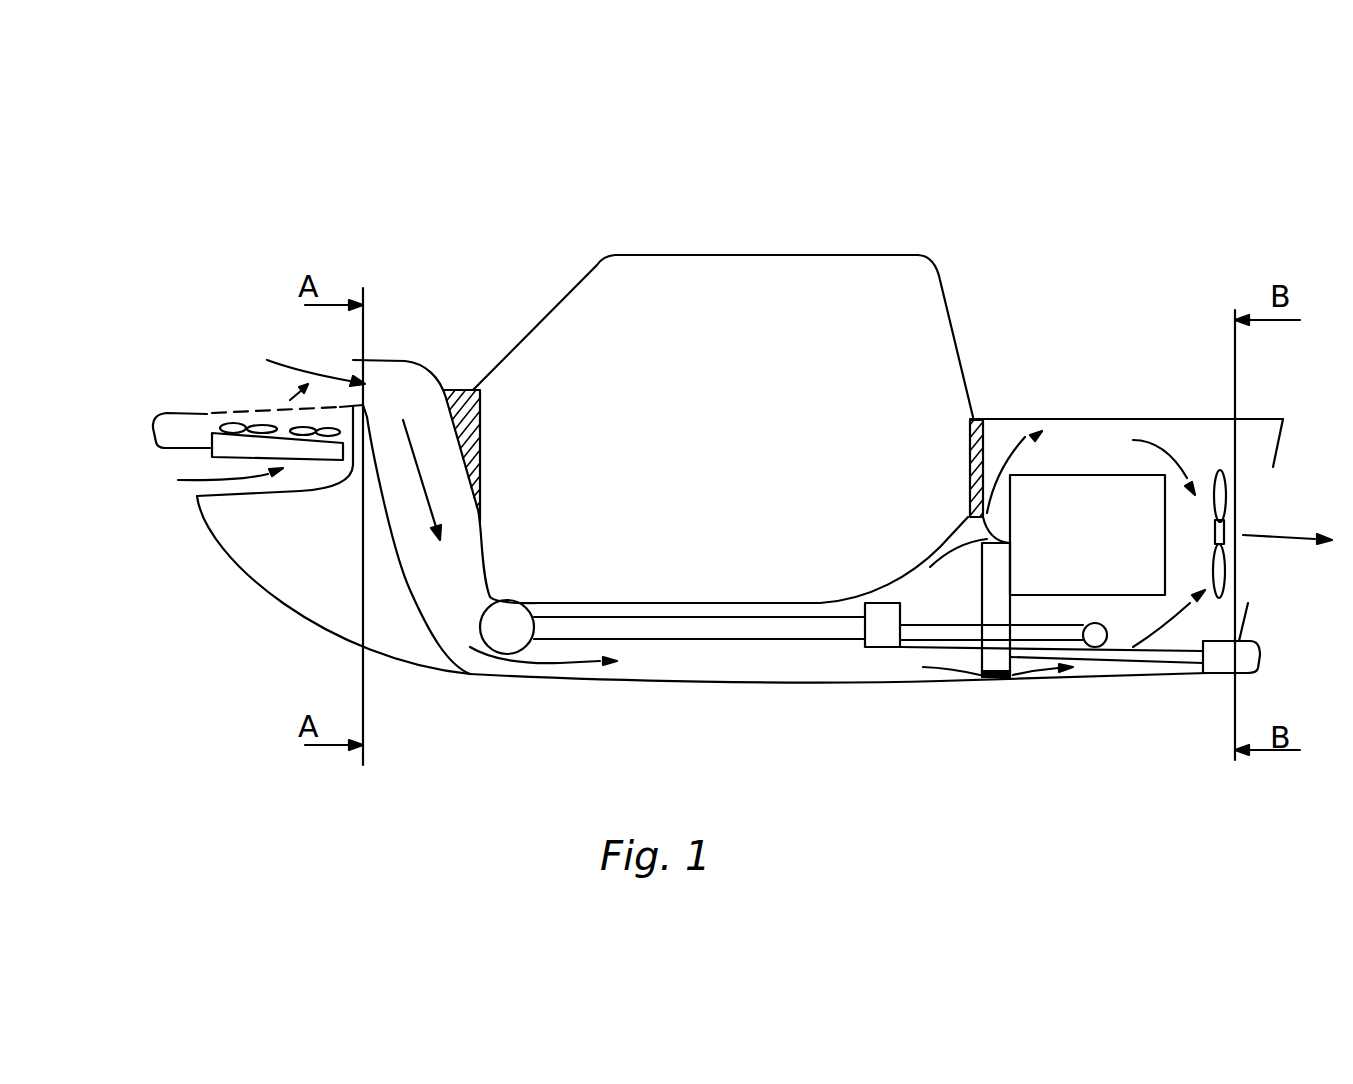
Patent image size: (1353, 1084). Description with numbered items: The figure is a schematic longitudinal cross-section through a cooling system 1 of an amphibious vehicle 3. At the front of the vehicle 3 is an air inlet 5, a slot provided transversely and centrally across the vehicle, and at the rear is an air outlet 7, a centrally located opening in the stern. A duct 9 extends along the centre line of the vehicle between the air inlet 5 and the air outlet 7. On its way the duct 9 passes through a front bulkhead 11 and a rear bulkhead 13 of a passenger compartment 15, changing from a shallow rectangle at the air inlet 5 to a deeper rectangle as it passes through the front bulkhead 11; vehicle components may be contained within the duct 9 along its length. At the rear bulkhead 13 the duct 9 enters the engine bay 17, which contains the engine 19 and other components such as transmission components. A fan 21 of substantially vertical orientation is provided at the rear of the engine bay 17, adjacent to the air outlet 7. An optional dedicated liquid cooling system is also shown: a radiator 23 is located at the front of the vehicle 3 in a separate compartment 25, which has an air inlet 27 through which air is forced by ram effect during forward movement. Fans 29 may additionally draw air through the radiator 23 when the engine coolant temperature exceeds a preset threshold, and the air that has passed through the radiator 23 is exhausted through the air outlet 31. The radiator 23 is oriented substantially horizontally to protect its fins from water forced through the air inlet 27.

The cooling system 1 is at (438, 307).
The amphibious vehicle 3 is at (835, 255).
The air inlet 5 is at (367, 380).
The air outlet 7 is at (1267, 602).
The duct 9 is at (813, 662).
The front bulkhead 11 is at (478, 388).
The rear bulkhead 13 is at (980, 437).
The passenger compartment 15 is at (687, 327).
The engine bay 17 is at (1102, 668).
The engine 19 is at (1073, 495).
The fan 21 is at (1220, 473).
The radiator 23 is at (210, 455).
The separate compartment 25 is at (200, 428).
The air inlet 27 is at (187, 497).
The fans 29 is at (297, 433).
The air outlet 31 is at (233, 410).